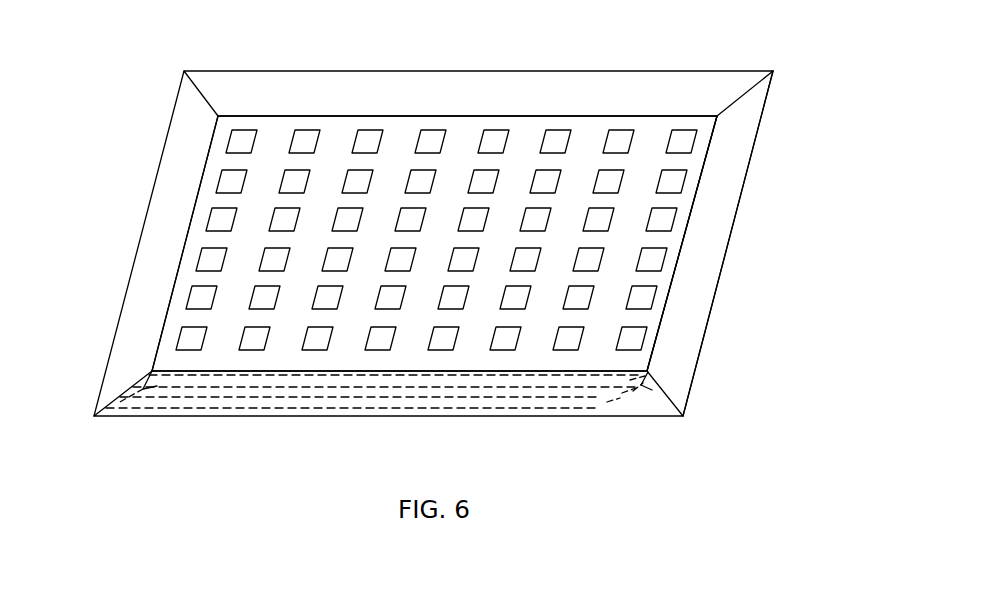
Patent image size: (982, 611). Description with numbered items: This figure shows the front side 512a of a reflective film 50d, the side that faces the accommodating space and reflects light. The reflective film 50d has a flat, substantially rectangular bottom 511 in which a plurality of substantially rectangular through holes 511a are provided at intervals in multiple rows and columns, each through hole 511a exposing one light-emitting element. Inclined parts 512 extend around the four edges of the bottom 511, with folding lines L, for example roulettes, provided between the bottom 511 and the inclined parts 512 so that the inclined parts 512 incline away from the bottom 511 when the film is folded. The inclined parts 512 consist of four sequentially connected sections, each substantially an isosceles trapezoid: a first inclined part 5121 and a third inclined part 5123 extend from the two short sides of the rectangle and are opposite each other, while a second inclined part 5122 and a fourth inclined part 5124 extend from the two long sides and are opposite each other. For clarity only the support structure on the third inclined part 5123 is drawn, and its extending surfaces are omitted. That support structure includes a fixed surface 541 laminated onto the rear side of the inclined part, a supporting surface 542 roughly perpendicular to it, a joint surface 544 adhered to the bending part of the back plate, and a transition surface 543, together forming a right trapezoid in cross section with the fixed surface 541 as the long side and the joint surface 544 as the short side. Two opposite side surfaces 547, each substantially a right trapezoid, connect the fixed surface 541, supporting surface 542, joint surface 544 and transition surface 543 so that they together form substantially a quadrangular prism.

The reflective film 50d is at (463, 21).
The inclined parts 512 is at (430, 231).
The first inclined part 5121 is at (760, 337).
The second inclined part 5122 is at (657, 412).
The third inclined part 5123 is at (190, 103).
The fourth inclined part 5124 is at (713, 80).
The front side 512a is at (730, 212).
The bottom 511 is at (693, 160).
The through holes 511a is at (672, 223).
The folding lines L is at (282, 115).
The fixed surface 541 is at (618, 386).
The supporting surface 542 is at (652, 383).
The transition surface 543 is at (620, 403).
The joint surface 544 is at (643, 391).
The side surfaces 547 is at (140, 388).